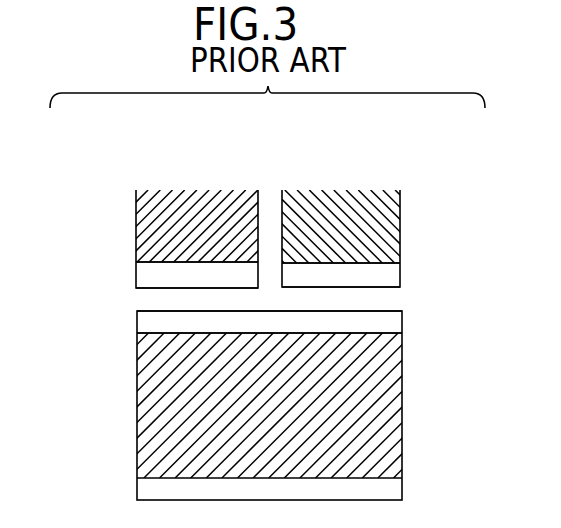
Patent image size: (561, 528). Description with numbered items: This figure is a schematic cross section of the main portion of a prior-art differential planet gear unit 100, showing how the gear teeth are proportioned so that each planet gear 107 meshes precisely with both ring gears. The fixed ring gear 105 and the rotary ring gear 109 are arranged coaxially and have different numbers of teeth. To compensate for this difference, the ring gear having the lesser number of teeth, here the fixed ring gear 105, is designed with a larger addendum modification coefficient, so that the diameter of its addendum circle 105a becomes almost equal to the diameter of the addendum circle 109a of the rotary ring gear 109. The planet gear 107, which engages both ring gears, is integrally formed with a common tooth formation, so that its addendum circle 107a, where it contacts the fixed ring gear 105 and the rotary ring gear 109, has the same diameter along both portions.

The differential planet gear unit 100 is at (267, 124).
The fixed ring gear 105 is at (166, 200).
The addendum circle of the fixed ring gear 105a is at (144, 288).
The rotary ring gear 109 is at (313, 198).
The addendum circle of the rotary ring gear 109a is at (384, 288).
The planet gear 107 is at (398, 388).
The addendum circle of the planet gear 107a is at (153, 310).